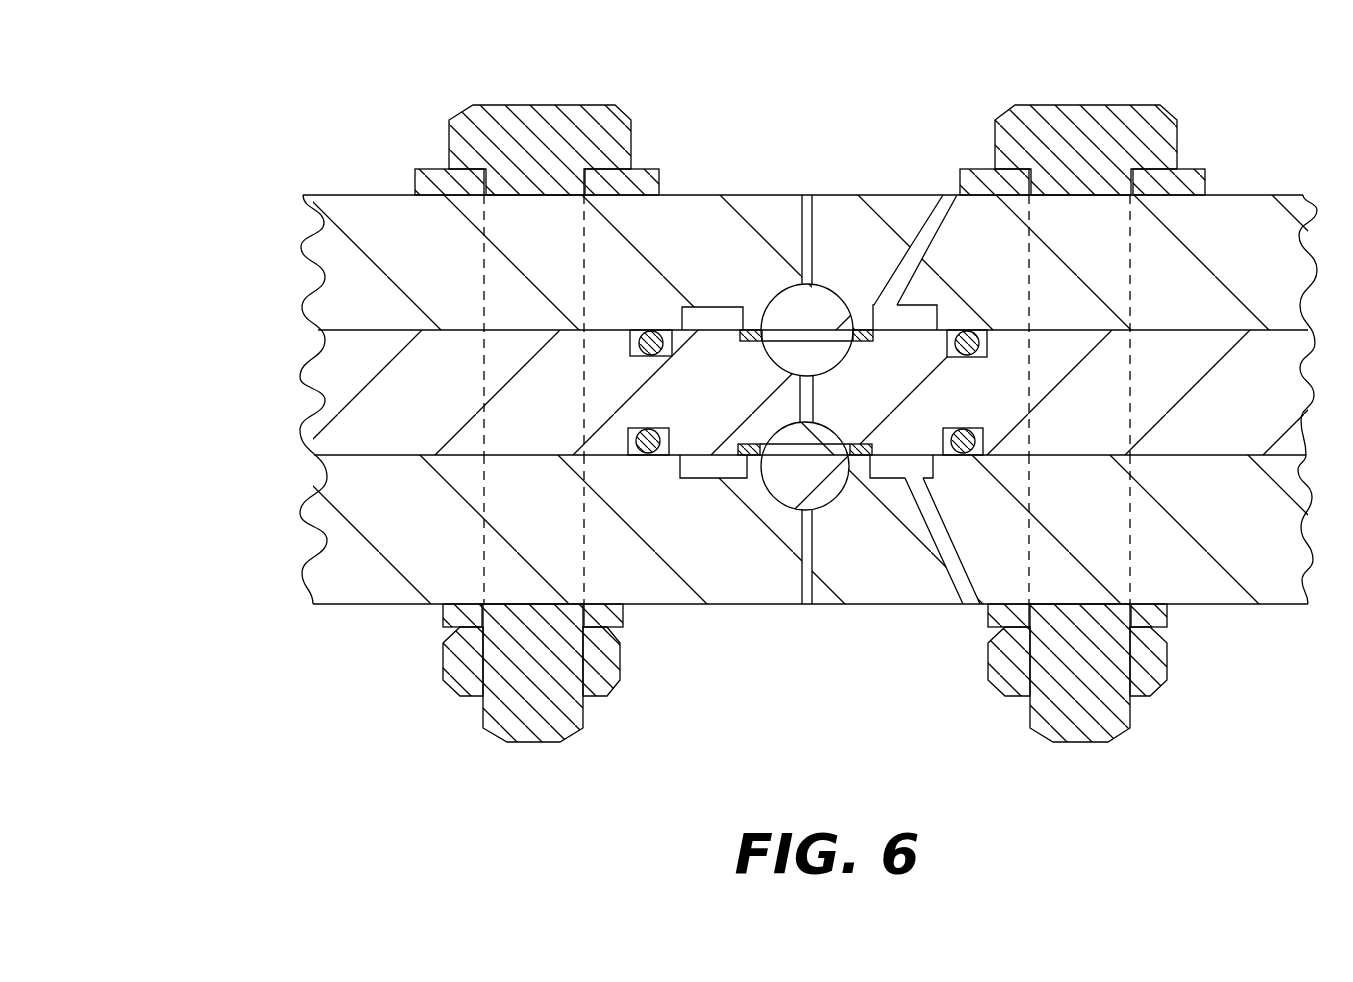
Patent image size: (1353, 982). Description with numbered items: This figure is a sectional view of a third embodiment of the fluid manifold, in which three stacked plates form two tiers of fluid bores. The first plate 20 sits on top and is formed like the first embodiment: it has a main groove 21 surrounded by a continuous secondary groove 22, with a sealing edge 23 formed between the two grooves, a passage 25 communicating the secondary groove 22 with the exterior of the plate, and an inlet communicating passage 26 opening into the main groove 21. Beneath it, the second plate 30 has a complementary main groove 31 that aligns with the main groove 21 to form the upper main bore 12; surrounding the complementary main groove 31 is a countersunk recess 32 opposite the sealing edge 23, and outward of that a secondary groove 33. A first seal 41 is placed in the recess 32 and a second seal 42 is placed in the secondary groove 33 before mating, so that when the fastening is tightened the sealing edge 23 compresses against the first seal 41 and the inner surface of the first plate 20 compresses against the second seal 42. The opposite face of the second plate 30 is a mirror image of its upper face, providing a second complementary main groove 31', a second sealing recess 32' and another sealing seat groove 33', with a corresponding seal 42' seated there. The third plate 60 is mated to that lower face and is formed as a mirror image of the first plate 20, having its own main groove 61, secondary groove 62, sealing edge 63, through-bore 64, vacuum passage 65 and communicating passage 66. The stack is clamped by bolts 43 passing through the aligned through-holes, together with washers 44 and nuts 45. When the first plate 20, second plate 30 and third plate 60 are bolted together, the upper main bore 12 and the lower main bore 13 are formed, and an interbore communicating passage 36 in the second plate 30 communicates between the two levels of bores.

The first plate 20 is at (303, 245).
The second plate 30 is at (302, 373).
The third plate 60 is at (303, 517).
The main bore 12 is at (820, 319).
The main bore 13 is at (819, 487).
The main groove 21 is at (827, 287).
The secondary groove 22 is at (875, 297).
The sealing edge 23 is at (862, 330).
The passage 25 is at (940, 222).
The inlet communicating passage 26 is at (808, 195).
The complementary main groove 31 is at (886, 359).
The second complementary main groove 31' is at (853, 416).
The countersunk recess 32 is at (719, 359).
The second sealing recess 32' is at (719, 426).
The secondary groove 33 is at (954, 376).
The sealing seat groove 33' is at (981, 409).
The interbore communicating passage 36 is at (800, 412).
The first seal 41 is at (753, 330).
The second seal 42 is at (672, 253).
The second seal 42' is at (652, 567).
The bolt 43 is at (1077, 113).
The washer 44 is at (1185, 168).
The nut 45 is at (1170, 666).
The main groove 61 is at (827, 512).
The secondary groove 62 is at (700, 482).
The sealing edge 63 is at (755, 456).
The through-bore 64 is at (1127, 540).
The vacuum passage 65 is at (970, 606).
The communicating passage 66 is at (803, 606).